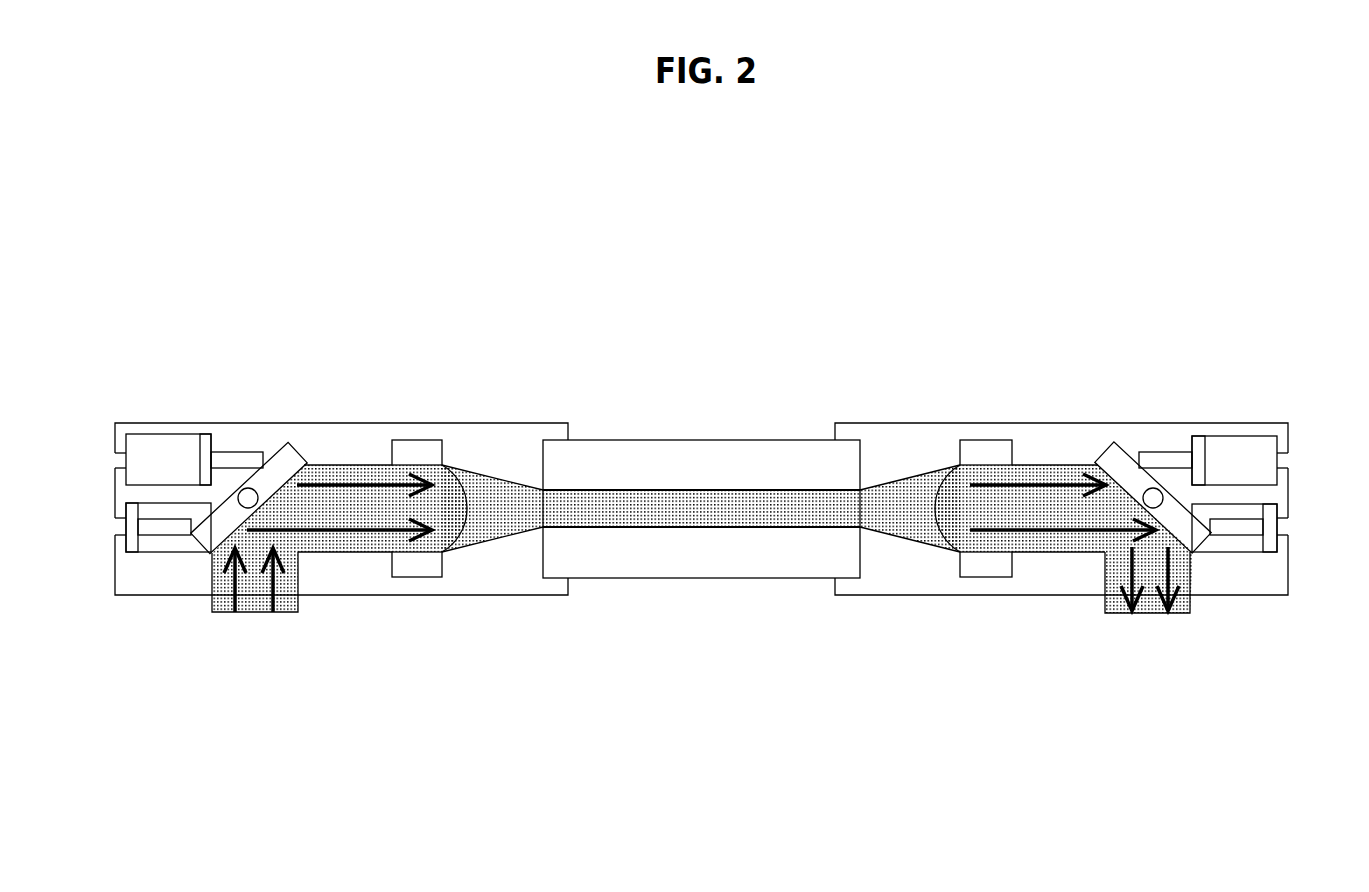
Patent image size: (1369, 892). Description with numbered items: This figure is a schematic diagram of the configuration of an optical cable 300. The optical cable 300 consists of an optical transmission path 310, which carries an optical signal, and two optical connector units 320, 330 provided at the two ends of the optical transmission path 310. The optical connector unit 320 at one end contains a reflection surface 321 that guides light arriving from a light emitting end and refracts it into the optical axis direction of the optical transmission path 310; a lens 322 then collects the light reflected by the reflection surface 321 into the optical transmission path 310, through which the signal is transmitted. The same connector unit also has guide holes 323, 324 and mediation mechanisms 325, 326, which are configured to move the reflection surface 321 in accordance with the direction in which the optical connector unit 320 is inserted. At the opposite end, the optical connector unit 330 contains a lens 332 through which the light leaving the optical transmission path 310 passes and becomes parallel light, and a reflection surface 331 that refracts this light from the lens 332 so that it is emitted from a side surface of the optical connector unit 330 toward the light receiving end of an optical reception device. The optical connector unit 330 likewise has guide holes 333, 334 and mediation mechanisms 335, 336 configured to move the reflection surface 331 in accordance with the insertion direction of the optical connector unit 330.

The optical cable 300 is at (1290, 790).
The optical transmission path 310 is at (700, 440).
The optical connector unit 320 is at (412, 596).
The reflection surface 321 is at (318, 464).
The lens 322 is at (412, 449).
The guide hole 323 is at (115, 462).
The guide hole 324 is at (115, 532).
The mediation mechanism 325 is at (206, 442).
The mediation mechanism 326 is at (133, 554).
The optical connector unit 330 is at (993, 596).
The reflection surface 331 is at (1187, 556).
The lens 332 is at (982, 449).
The guide hole 333 is at (1288, 462).
The guide hole 334 is at (1284, 524).
The mediation mechanism 335 is at (1200, 444).
The mediation mechanism 336 is at (1288, 532).